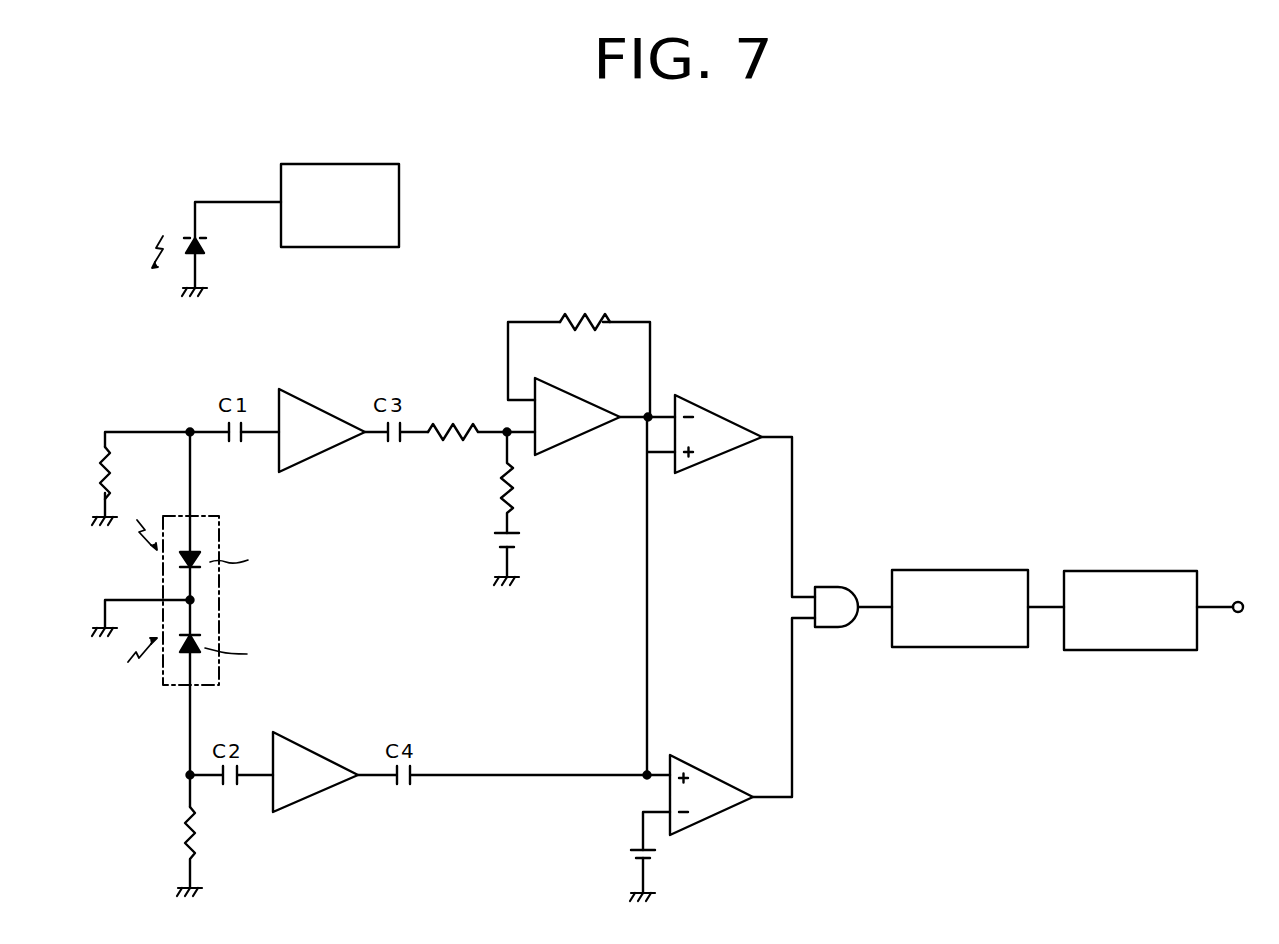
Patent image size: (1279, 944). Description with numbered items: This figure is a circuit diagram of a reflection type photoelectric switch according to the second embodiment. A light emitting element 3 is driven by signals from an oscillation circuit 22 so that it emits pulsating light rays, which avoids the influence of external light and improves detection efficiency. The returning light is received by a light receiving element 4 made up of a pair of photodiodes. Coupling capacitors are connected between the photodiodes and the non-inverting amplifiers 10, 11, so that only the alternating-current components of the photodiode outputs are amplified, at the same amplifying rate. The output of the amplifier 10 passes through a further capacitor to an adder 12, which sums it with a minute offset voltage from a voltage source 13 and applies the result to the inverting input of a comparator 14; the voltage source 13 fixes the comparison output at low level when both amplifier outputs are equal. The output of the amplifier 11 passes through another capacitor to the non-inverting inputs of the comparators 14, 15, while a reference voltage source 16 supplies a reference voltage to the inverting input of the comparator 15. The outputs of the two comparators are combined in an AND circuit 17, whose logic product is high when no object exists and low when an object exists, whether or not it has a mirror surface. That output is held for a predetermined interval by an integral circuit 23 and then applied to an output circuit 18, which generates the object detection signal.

The light emitting element 3 is at (212, 256).
The light receiving element 4 is at (162, 562).
The non-inverting amplifier 10 is at (310, 405).
The non-inverting amplifier 11 is at (308, 748).
The adder 12 is at (588, 400).
The voltage source 13 is at (523, 543).
The comparator 14 is at (738, 420).
The comparator 15 is at (725, 778).
The reference voltage source 16 is at (624, 856).
The AND circuit 17 is at (838, 585).
The output circuit 18 is at (1153, 571).
The oscillation circuit 22 is at (370, 165).
The integral circuit 23 is at (975, 569).